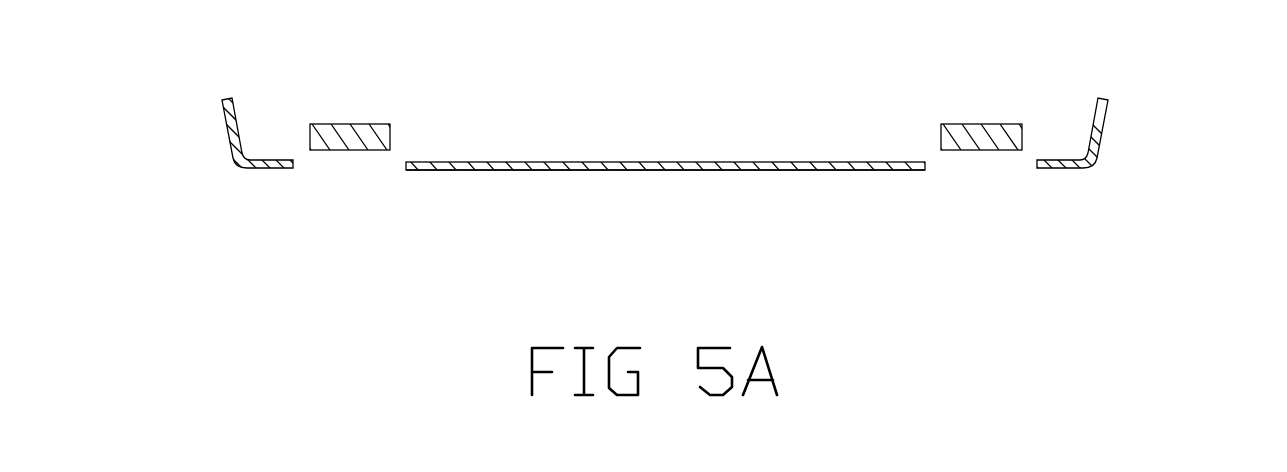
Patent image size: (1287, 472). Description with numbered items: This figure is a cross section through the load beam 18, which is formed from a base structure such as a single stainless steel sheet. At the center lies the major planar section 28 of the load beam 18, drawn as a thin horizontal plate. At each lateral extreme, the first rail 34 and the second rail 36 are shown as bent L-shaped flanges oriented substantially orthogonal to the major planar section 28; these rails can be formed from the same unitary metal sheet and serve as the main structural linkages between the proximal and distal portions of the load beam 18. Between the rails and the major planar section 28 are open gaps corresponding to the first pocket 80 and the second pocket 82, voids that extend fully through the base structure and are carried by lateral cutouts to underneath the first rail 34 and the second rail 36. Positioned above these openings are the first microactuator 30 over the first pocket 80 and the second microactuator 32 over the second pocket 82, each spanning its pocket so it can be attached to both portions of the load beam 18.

The load beam 18 is at (808, 192).
The major planar section 28 is at (585, 172).
The first microactuator 30 is at (333, 126).
The second microactuator 32 is at (980, 127).
The first rail 34 is at (225, 126).
The second rail 36 is at (1105, 125).
The first pocket 80 is at (321, 170).
The second pocket 82 is at (992, 175).